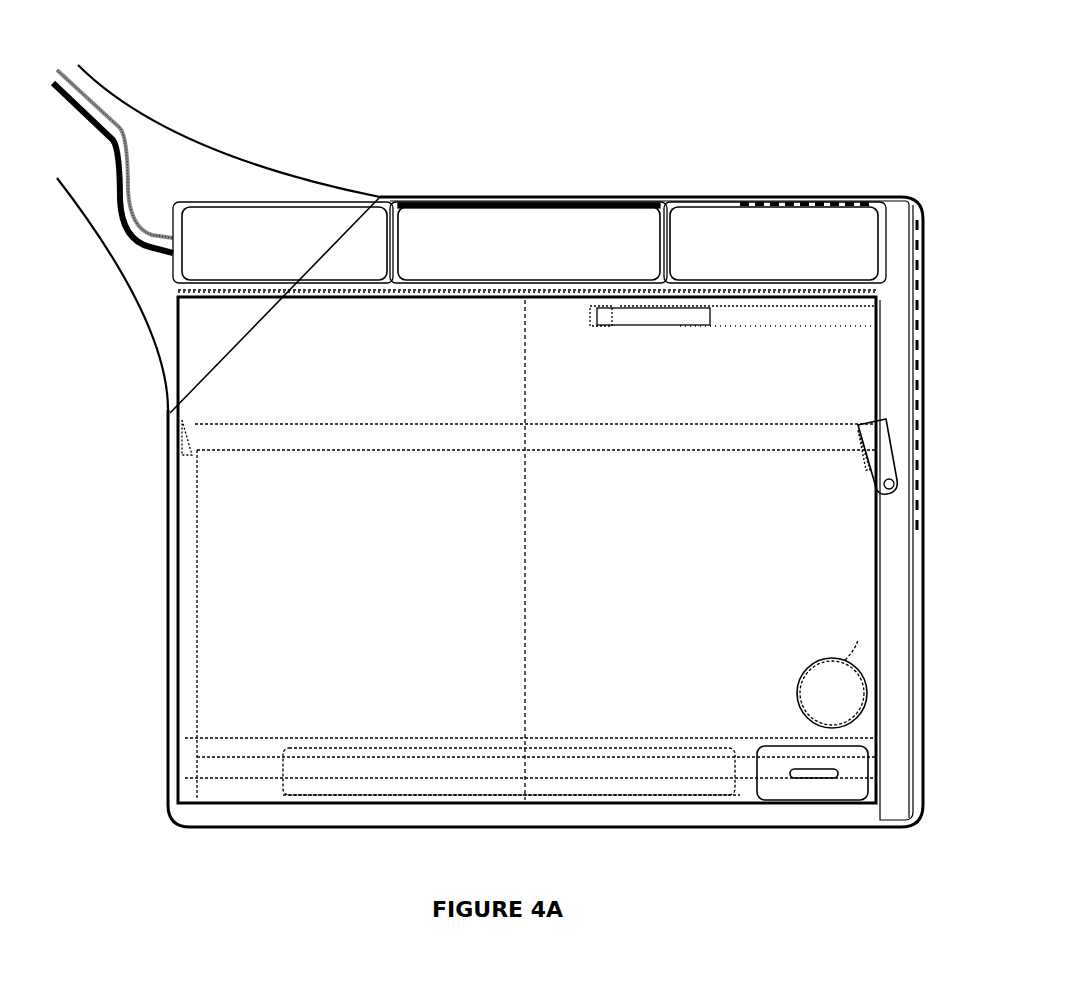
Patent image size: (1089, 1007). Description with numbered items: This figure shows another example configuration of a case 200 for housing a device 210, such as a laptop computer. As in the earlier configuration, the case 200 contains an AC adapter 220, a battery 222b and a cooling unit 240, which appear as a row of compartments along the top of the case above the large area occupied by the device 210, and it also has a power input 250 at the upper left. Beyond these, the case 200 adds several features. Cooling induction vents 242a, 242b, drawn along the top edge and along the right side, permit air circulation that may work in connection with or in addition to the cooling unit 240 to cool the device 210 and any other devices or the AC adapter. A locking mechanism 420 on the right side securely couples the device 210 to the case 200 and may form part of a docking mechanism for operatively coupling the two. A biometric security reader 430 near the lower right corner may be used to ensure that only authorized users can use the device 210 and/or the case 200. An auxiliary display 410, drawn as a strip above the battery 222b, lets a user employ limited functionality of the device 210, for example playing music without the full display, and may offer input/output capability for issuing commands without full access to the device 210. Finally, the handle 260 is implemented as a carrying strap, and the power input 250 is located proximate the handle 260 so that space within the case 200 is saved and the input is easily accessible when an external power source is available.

The case 200 is at (490, 502).
The device 210 is at (527, 546).
The AC adapter 220 is at (283, 242).
The battery 222b is at (528, 242).
The cooling unit 240 is at (775, 242).
The cooling induction vent 242a is at (788, 202).
The cooling induction vent 242b is at (917, 492).
The power input 250 is at (120, 140).
The handle 260 is at (137, 120).
The auxiliary display 410 is at (503, 207).
The locking mechanism 420 is at (883, 453).
The biometric security reader 430 is at (815, 773).